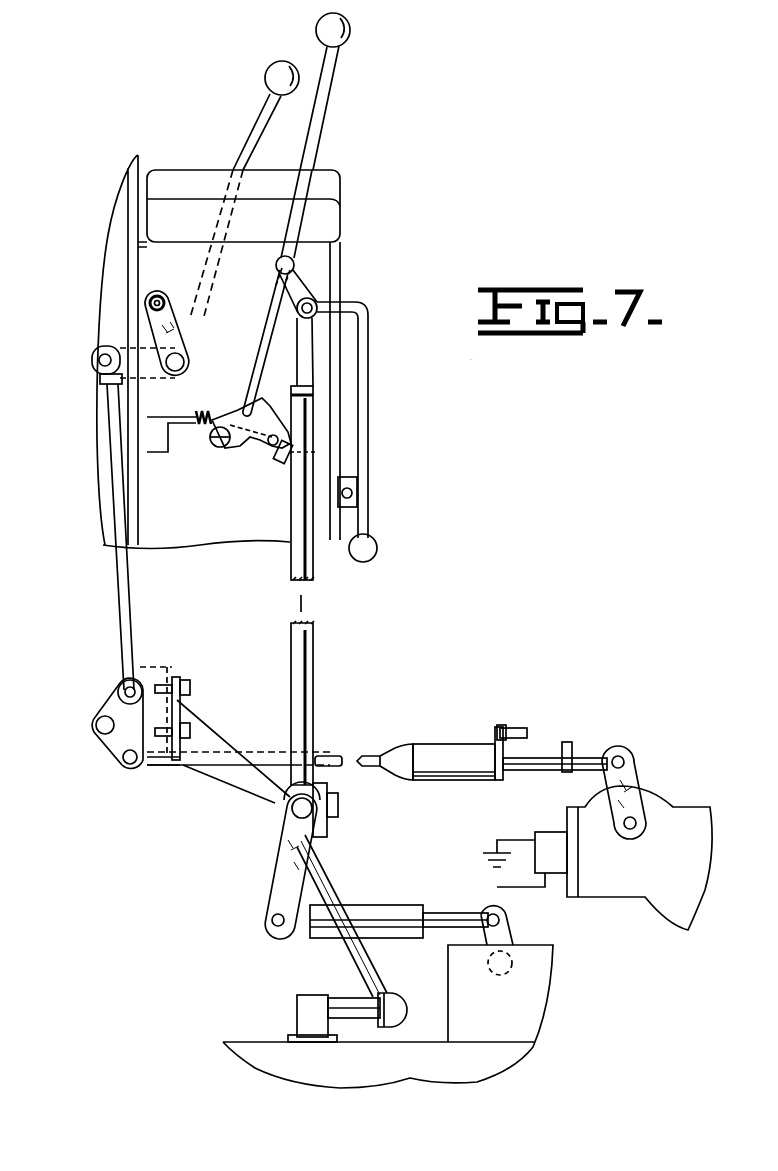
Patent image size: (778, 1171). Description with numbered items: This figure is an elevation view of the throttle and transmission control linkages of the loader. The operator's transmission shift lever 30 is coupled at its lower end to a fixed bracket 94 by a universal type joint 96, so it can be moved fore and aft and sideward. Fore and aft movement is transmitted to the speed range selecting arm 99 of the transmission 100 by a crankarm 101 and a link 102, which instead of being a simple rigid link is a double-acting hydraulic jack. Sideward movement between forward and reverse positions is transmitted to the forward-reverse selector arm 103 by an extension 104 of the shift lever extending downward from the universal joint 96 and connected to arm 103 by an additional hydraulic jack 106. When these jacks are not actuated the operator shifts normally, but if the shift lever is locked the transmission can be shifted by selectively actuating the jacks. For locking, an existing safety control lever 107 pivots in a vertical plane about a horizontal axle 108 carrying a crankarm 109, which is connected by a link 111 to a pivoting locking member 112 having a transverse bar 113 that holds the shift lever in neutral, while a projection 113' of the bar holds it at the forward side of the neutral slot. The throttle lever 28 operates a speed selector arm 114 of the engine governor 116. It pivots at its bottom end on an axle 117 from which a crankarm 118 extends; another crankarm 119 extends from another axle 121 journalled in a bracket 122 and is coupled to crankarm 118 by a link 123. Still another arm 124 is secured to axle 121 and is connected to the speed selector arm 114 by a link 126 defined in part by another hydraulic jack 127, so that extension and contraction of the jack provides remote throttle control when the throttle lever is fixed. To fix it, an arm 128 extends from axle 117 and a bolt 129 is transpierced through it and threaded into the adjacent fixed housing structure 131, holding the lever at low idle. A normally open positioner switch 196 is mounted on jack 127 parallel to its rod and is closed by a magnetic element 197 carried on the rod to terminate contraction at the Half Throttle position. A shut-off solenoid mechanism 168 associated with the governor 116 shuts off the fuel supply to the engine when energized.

The throttle lever 28 is at (266, 70).
The transmission shift lever 30 is at (350, 24).
The fixed housing structure 131 is at (137, 237).
The arm 128 is at (178, 312).
The bolt 129 is at (150, 303).
The crankarm 118 is at (105, 346).
The axle 117 is at (113, 383).
The link 111 is at (281, 318).
The pivoting locking member 112 is at (258, 392).
The transverse bar 113 is at (262, 469).
The projection 113' is at (355, 449).
The crankarm 109 is at (294, 263).
The horizontal axle 108 is at (318, 300).
The safety control lever 107 is at (366, 392).
The link 123 is at (125, 603).
The bracket 122 is at (163, 667).
The crankarm 119 is at (118, 688).
The axle 121 is at (98, 728).
The arm 124 is at (121, 764).
The fixed bracket 94 is at (245, 772).
The link 126 is at (325, 725).
The hydraulic jack 127 is at (462, 716).
The positioner switch 196 is at (520, 706).
The magnetic element 197 is at (568, 742).
The speed selector arm 114 is at (634, 762).
The engine governor 116 is at (650, 890).
The solenoid mechanism 168 is at (542, 835).
The universal joint 96 is at (330, 798).
The crankarm 101 is at (286, 870).
The extension 104 is at (316, 870).
The link 102 is at (370, 905).
The forward-reverse selector arm 103 is at (346, 998).
The hydraulic jack 106 is at (398, 976).
The speed range selecting arm 99 is at (505, 926).
The transmission 100 is at (510, 1033).